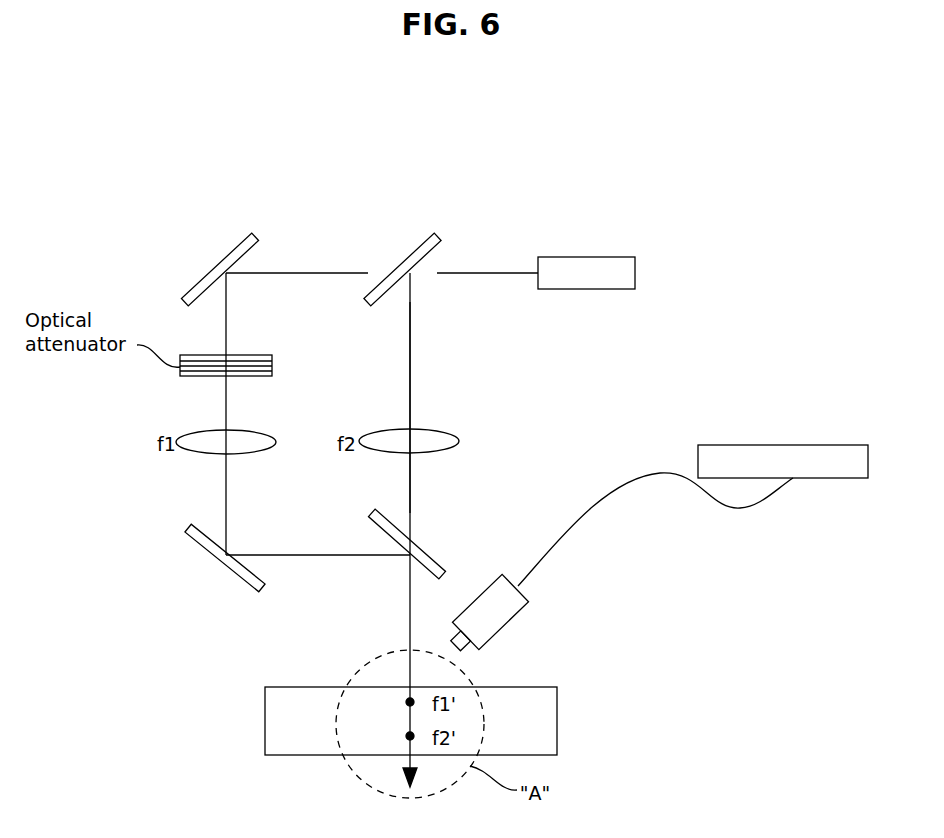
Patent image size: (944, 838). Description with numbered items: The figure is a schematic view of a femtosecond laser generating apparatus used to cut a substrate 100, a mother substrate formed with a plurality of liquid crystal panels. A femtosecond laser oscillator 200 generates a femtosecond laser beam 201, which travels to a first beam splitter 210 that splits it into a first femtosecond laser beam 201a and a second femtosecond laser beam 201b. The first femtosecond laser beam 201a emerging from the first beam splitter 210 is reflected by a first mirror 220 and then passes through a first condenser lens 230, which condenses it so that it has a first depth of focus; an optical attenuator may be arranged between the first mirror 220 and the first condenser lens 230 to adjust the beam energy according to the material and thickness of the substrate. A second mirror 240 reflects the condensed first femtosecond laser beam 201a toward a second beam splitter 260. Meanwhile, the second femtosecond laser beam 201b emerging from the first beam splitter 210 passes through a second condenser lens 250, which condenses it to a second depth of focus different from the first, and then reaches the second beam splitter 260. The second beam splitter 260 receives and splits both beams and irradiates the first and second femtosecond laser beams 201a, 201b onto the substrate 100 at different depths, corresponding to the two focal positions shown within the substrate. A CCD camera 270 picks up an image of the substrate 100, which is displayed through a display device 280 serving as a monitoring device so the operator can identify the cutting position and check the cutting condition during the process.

The substrate 100 is at (540, 718).
The femtosecond laser oscillator 200 is at (580, 273).
The femtosecond laser beam 201 is at (492, 272).
The first femtosecond laser beam 201a is at (300, 272).
The second femtosecond laser beam 201b is at (410, 403).
The first beam splitter 210 is at (420, 250).
The first mirror 220 is at (232, 258).
The first condenser lens 230 is at (248, 438).
The second mirror 240 is at (205, 545).
The second condenser lens 250 is at (444, 443).
The second beam splitter 260 is at (425, 558).
The CCD camera 270 is at (493, 608).
The display device 280 is at (782, 444).